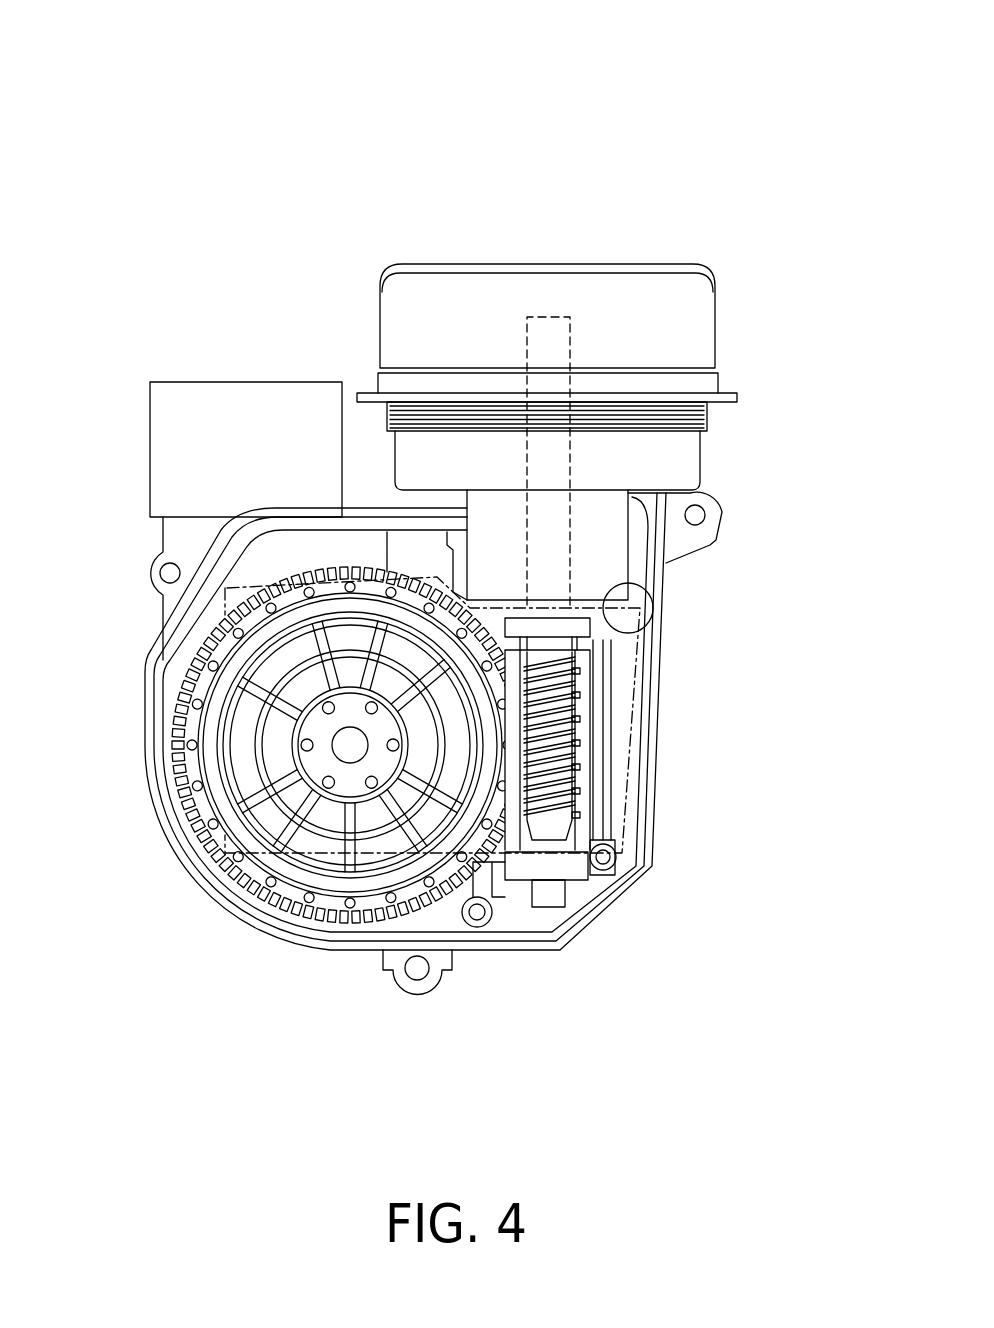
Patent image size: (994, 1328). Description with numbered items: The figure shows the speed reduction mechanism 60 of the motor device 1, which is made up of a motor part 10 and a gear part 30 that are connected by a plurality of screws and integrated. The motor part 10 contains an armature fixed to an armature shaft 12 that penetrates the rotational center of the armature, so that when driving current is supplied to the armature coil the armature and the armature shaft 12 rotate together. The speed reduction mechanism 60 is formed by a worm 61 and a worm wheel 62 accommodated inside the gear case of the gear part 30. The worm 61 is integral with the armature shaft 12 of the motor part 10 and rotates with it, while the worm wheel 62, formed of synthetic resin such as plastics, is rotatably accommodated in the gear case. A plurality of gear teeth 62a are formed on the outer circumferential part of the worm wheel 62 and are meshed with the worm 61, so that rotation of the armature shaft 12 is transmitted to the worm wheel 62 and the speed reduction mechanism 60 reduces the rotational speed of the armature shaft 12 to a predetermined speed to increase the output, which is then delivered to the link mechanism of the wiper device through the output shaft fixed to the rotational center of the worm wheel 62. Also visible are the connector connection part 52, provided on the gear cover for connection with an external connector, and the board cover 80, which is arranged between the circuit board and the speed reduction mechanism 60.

The motor device 1 is at (135, 223).
The motor part 10 is at (730, 250).
The armature shaft 12 is at (547, 316).
The gear part 30 is at (600, 950).
The connector connection part 52 is at (188, 382).
The speed reduction mechanism 60 is at (657, 762).
The worm 61 is at (565, 702).
The worm wheel 62 is at (560, 768).
The gear teeth 62a is at (425, 905).
The board cover 80 is at (340, 860).